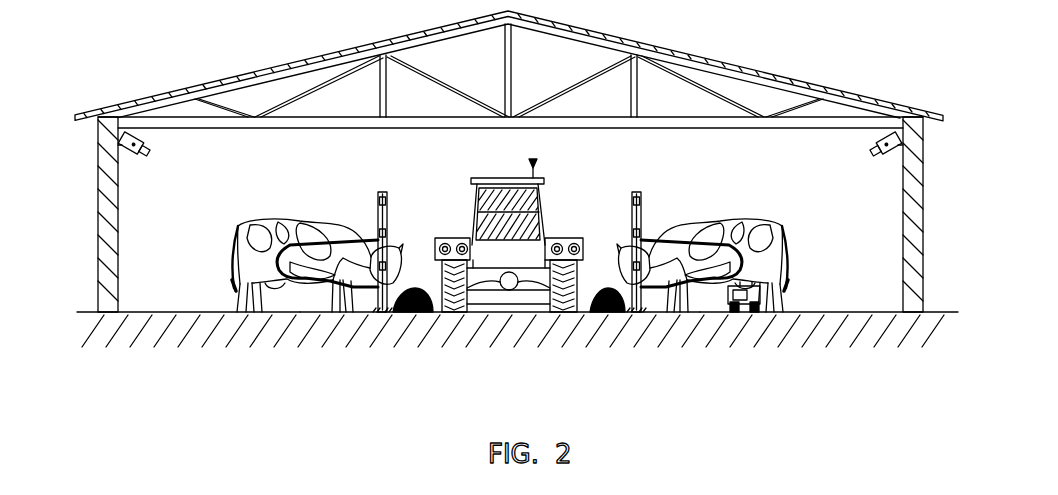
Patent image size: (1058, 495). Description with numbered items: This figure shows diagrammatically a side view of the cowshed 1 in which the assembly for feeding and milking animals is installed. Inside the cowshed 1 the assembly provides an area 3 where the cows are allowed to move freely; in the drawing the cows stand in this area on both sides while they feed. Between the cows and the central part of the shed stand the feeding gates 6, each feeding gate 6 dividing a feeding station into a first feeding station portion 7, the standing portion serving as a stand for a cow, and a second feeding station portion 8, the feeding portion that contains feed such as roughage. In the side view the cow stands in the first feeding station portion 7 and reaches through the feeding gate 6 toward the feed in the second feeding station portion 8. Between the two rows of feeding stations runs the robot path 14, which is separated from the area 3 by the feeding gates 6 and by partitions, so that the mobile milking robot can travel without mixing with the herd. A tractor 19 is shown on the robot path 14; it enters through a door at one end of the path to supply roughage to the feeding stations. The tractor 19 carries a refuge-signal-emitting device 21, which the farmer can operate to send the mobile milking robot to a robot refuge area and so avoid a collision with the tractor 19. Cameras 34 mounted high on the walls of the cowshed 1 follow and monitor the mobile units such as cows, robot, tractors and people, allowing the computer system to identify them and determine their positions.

The cowshed 1 is at (88, 212).
The area where the animals are allowed to move freely 3 is at (190, 314).
The feeding gate 6 is at (389, 208).
The first feeding station portion 7 is at (354, 314).
The second feeding station portion 8 is at (404, 314).
The robot path 14 is at (508, 314).
The tractor 19 is at (549, 215).
The refuge-signal-emitting device 21 is at (546, 171).
The camera 34 is at (152, 145).